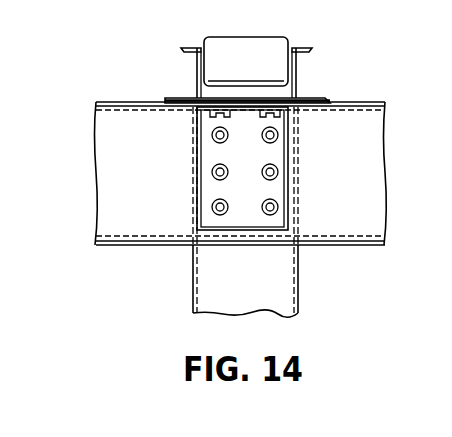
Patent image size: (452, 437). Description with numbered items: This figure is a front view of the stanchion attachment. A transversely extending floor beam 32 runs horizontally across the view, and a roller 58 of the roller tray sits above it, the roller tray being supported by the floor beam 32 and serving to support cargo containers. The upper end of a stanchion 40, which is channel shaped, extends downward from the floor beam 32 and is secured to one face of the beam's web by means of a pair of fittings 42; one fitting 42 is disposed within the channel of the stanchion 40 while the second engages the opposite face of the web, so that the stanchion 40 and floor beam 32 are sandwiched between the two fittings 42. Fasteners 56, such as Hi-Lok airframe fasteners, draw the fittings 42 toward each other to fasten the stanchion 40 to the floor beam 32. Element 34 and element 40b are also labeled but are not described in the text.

The floor beam 32 is at (110, 123).
The bracket 34 is at (192, 97).
The roller 58 is at (271, 50).
The fitting 42 is at (270, 150).
The fastener 56 is at (217, 135).
The stanchion 40 is at (279, 270).
The column web 40b is at (193, 270).